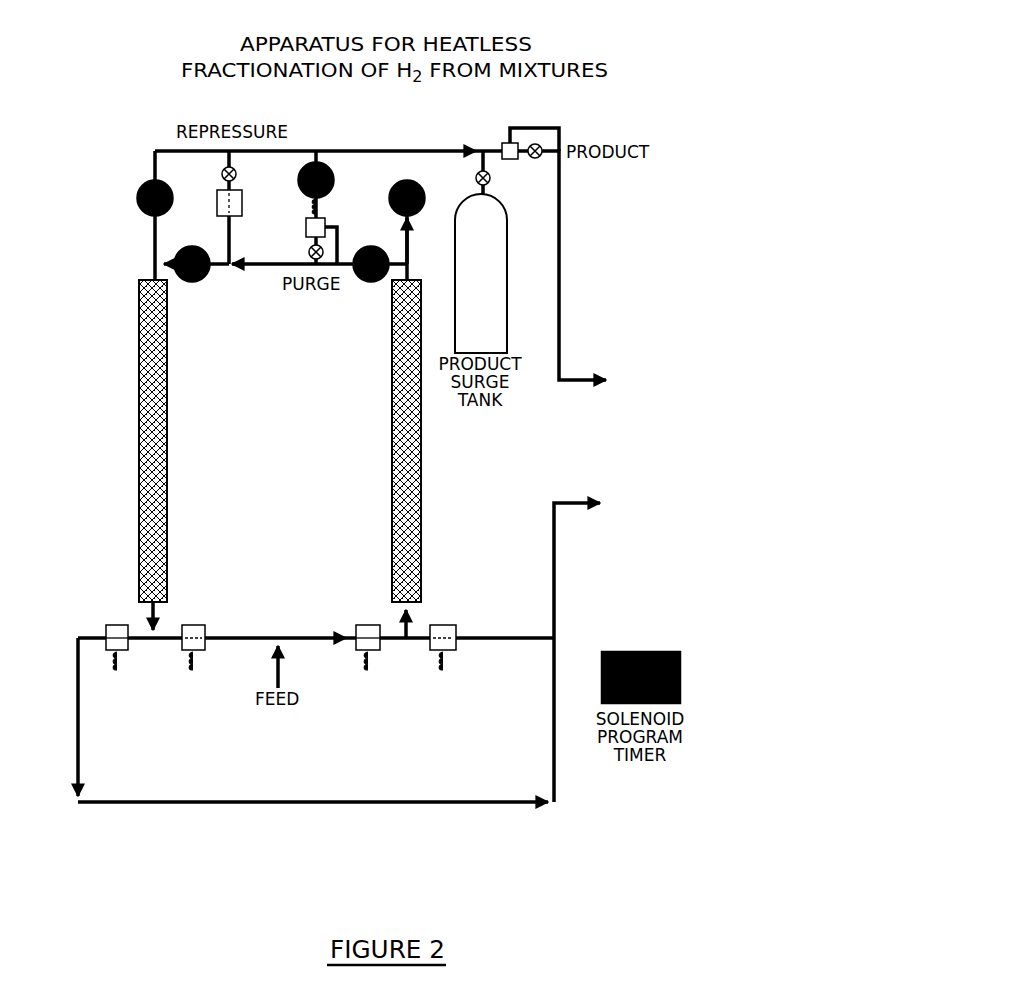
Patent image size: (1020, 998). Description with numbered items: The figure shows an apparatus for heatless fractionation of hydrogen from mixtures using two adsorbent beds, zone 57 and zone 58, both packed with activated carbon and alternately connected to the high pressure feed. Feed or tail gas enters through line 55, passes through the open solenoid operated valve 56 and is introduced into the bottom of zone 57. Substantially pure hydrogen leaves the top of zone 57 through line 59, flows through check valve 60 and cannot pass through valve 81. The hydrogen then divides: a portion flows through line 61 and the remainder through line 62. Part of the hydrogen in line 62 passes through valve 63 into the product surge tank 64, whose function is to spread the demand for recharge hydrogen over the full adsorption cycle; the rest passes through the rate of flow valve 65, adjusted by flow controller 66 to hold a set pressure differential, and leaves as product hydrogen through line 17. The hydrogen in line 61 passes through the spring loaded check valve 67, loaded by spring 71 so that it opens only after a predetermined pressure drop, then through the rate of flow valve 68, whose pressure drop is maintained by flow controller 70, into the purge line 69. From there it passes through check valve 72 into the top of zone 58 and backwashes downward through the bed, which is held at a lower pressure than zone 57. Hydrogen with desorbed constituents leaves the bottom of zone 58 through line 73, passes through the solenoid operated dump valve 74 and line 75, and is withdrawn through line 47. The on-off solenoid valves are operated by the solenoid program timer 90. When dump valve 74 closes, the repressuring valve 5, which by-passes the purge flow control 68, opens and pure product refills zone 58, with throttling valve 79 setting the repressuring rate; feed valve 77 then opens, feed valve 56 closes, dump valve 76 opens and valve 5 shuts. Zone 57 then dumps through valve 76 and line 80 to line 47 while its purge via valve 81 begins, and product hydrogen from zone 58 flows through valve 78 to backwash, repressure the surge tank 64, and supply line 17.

The repressuring valve 5 is at (242, 203).
The product line 17 is at (559, 222).
The withdrawal line 47 is at (554, 562).
The feed line 55 is at (278, 662).
The solenoid operated feed valve 56 is at (370, 624).
The adsorption zone 57 is at (421, 448).
The adsorption zone 58 is at (139, 445).
The hydrogen outlet line 59 is at (418, 235).
The check valve 60 is at (421, 187).
The repressure line 61 is at (352, 151).
The product line 62 is at (425, 151).
The valve 63 is at (499, 168).
The product surge tank 64 is at (488, 297).
The rate of flow valve 65 is at (535, 159).
The flow controller 66 is at (525, 128).
The spring loaded check valve 67 is at (298, 184).
The rate of flow valve 68 is at (308, 253).
The purge line 69 is at (248, 275).
The flow controller 70 is at (345, 222).
The spring 71 is at (306, 206).
The check valve 72 is at (188, 246).
The outlet line 73 is at (143, 638).
The solenoid operated dump valve 74 is at (116, 624).
The dump line 75 is at (268, 802).
The dump valve 76 is at (446, 624).
The feed valve 77 is at (197, 624).
The check valve 78 is at (138, 188).
The throttling valve 79 is at (220, 175).
The dump line 80 is at (497, 638).
The check valve 81 is at (361, 280).
The multicam recycling electric timer 90 is at (628, 688).